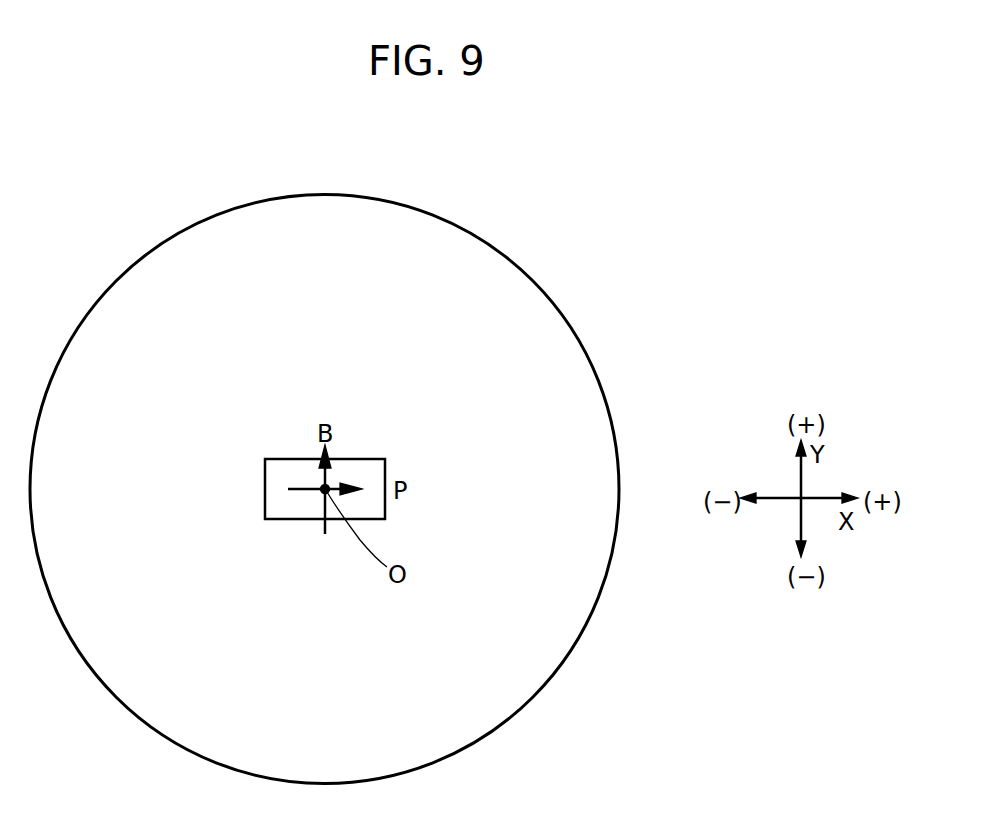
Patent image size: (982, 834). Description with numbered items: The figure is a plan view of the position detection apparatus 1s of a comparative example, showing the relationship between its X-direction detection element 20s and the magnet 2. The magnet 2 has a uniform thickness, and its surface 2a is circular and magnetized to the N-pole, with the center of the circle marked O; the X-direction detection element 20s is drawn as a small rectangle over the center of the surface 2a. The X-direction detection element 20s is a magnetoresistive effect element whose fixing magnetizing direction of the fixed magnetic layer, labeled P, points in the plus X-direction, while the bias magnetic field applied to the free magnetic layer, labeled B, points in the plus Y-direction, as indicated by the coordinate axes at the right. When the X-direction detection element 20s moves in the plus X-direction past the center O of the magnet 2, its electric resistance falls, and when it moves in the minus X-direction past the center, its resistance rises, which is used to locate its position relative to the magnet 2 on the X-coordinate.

The position detection apparatus 1s is at (401, 190).
The magnet 2 is at (523, 272).
The surface 2a is at (590, 385).
The X-direction detection element 20s is at (288, 520).